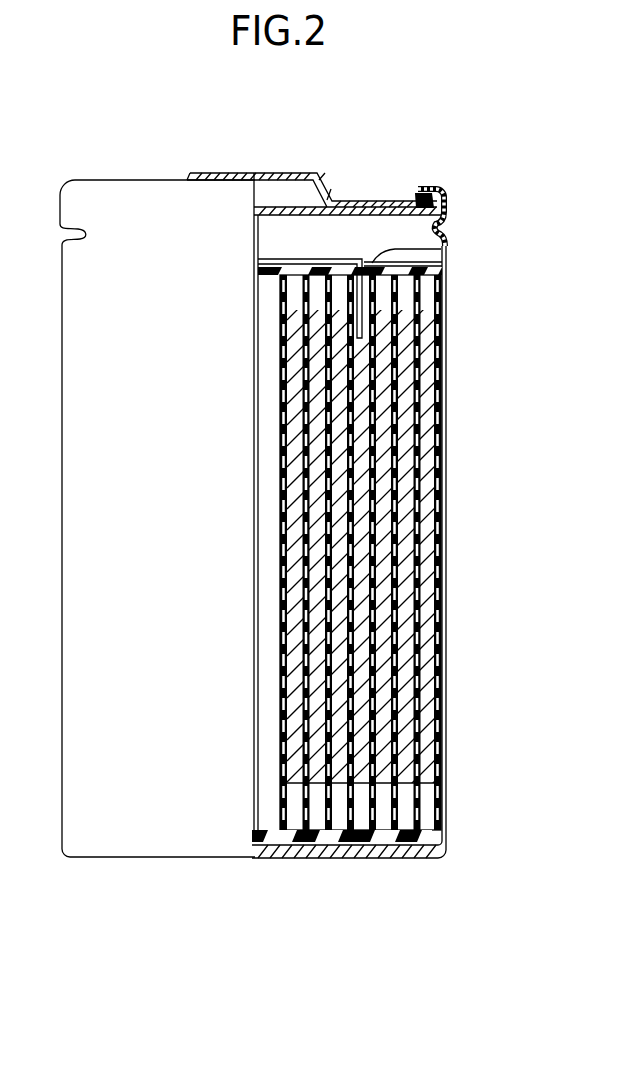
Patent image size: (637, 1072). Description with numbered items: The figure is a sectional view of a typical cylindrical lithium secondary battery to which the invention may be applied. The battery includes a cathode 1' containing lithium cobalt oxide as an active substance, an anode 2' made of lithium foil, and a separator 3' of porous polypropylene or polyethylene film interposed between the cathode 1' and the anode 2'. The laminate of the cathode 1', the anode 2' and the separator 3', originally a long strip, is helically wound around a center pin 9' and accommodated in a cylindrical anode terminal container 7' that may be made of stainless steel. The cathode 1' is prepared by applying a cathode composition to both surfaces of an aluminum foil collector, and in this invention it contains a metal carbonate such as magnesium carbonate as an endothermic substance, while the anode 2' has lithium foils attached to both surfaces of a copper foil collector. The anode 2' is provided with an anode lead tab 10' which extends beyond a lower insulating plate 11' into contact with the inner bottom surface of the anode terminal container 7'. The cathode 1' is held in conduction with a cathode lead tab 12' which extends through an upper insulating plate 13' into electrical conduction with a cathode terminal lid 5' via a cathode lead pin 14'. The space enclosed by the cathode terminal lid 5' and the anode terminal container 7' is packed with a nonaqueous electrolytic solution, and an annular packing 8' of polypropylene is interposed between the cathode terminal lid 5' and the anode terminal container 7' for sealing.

The cathode 1' is at (398, 552).
The anode 2' is at (402, 547).
The separator 3' is at (411, 535).
The cathode terminal lid 5' is at (312, 145).
The anode terminal container 7' is at (347, 894).
The annular packing 8' is at (436, 165).
The center pin 9' is at (399, 552).
The anode lead tab 10' is at (299, 515).
The lower insulating plate 11' is at (325, 887).
The cathode lead tab 12' is at (350, 213).
The upper insulating plate 13' is at (449, 229).
The cathode lead pin 14' is at (339, 162).